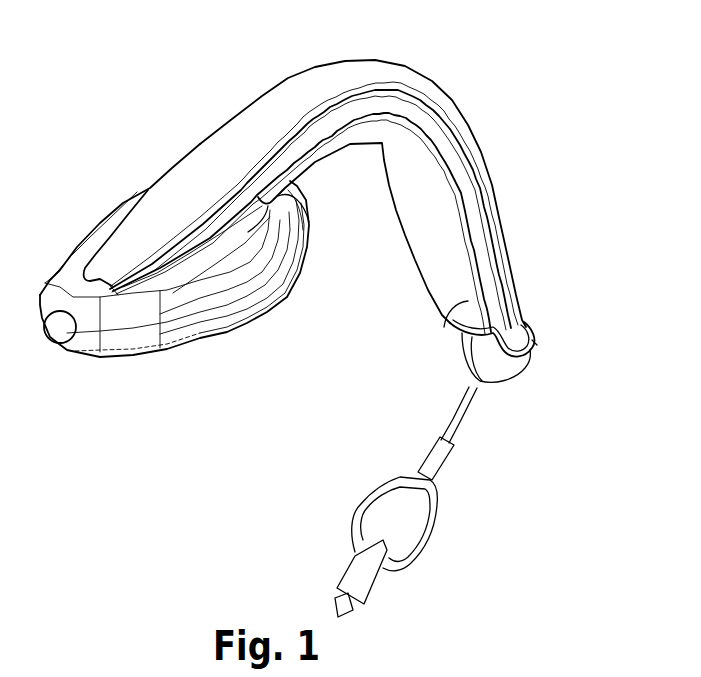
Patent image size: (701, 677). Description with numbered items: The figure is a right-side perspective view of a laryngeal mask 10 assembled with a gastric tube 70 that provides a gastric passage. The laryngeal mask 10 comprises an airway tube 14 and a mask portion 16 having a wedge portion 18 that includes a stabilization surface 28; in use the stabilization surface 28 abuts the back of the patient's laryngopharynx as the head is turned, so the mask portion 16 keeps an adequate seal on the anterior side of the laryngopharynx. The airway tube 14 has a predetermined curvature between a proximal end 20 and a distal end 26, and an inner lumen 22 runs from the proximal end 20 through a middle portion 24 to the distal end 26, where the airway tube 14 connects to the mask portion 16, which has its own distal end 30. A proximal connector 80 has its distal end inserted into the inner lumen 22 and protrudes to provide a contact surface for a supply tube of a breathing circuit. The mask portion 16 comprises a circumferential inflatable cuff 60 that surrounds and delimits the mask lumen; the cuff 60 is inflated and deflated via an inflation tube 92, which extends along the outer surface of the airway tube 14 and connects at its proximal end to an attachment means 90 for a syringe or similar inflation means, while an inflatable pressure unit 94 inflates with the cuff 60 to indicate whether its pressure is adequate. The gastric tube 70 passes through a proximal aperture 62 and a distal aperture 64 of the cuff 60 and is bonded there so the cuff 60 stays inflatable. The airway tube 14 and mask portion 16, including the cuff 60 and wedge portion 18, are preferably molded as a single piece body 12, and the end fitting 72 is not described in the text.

The laryngeal mask 10 is at (360, 340).
The single piece body 12 is at (152, 52).
The airway tube 14 is at (343, 64).
The mask portion 16 is at (60, 168).
The wedge portion 18 is at (191, 172).
The proximal end 20 is at (445, 327).
The inner lumen 22 is at (455, 340).
The middle portion 24 is at (405, 76).
The distal end 26 is at (284, 94).
The stabilization surface 28 is at (163, 217).
The distal end 30 is at (93, 277).
The inflatable cuff 60 is at (202, 303).
The proximal aperture 62 is at (127, 287).
The distal aperture 64 is at (58, 345).
The gastric tube 70 is at (205, 232).
The connector end 72 is at (538, 350).
The proximal connector 80 is at (512, 383).
The attachment means 90 is at (350, 607).
The inflation tube 92 is at (465, 422).
The inflatable pressure unit 94 is at (405, 523).